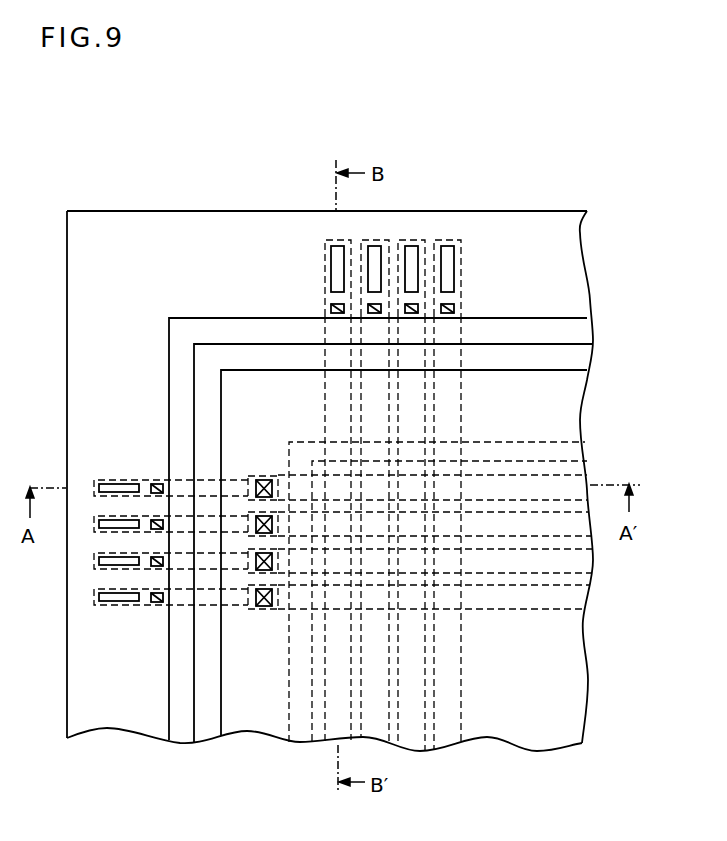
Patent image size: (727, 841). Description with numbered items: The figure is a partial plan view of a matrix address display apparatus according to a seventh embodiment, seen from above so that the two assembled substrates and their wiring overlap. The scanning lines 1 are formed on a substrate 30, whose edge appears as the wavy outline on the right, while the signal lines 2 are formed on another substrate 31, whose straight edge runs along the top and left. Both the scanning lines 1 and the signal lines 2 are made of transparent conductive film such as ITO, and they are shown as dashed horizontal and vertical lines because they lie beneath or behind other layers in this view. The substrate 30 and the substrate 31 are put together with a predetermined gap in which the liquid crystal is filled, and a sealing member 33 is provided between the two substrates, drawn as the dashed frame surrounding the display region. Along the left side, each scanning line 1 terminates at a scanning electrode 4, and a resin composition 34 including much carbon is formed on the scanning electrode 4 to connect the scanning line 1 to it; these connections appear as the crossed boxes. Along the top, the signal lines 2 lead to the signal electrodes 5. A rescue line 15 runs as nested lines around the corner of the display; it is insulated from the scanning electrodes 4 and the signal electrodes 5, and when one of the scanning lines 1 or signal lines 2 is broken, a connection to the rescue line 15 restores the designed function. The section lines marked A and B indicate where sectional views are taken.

The scanning line 1 is at (575, 594).
The signal line 2 is at (447, 743).
The scanning electrode 4 is at (94, 594).
The signal electrode 5 is at (445, 246).
The rescue line 15 is at (210, 318).
The substrate 30 is at (572, 390).
The substrate 31 is at (135, 211).
The sealing member 33 is at (300, 745).
The resin composition 34 is at (263, 609).